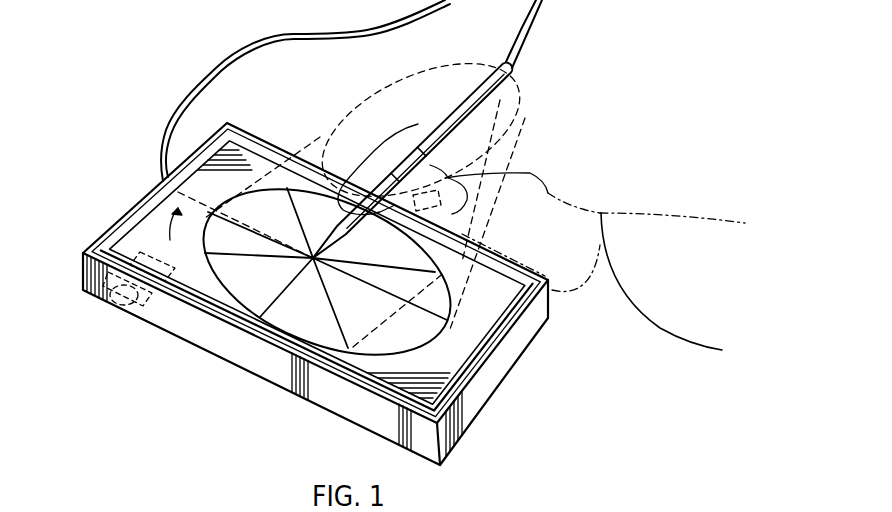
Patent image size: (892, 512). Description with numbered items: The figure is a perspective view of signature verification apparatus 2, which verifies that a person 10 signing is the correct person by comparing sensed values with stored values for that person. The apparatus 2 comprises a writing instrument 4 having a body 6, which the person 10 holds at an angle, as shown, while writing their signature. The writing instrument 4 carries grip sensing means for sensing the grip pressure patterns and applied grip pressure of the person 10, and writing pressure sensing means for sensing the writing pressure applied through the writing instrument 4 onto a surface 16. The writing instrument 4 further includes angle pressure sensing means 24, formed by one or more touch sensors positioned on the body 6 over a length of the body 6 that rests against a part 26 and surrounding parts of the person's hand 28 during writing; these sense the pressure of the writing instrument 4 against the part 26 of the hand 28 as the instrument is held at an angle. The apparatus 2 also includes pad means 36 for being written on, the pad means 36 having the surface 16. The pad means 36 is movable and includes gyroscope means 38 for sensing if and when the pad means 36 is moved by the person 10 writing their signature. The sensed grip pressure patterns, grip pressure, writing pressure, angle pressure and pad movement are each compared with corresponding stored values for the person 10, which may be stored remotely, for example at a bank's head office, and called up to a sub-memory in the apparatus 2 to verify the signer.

The signature verification apparatus 2 is at (146, 86).
The writing instrument 4 is at (479, 86).
The body 6 is at (450, 128).
The person 10 is at (703, 222).
The surface 16 is at (266, 287).
The angle pressure sensing means 24 is at (423, 145).
The part of the person's hand 26 is at (533, 172).
The person's hand 28 is at (540, 130).
The pad means 36 is at (164, 324).
The gyroscope means 38 is at (106, 312).